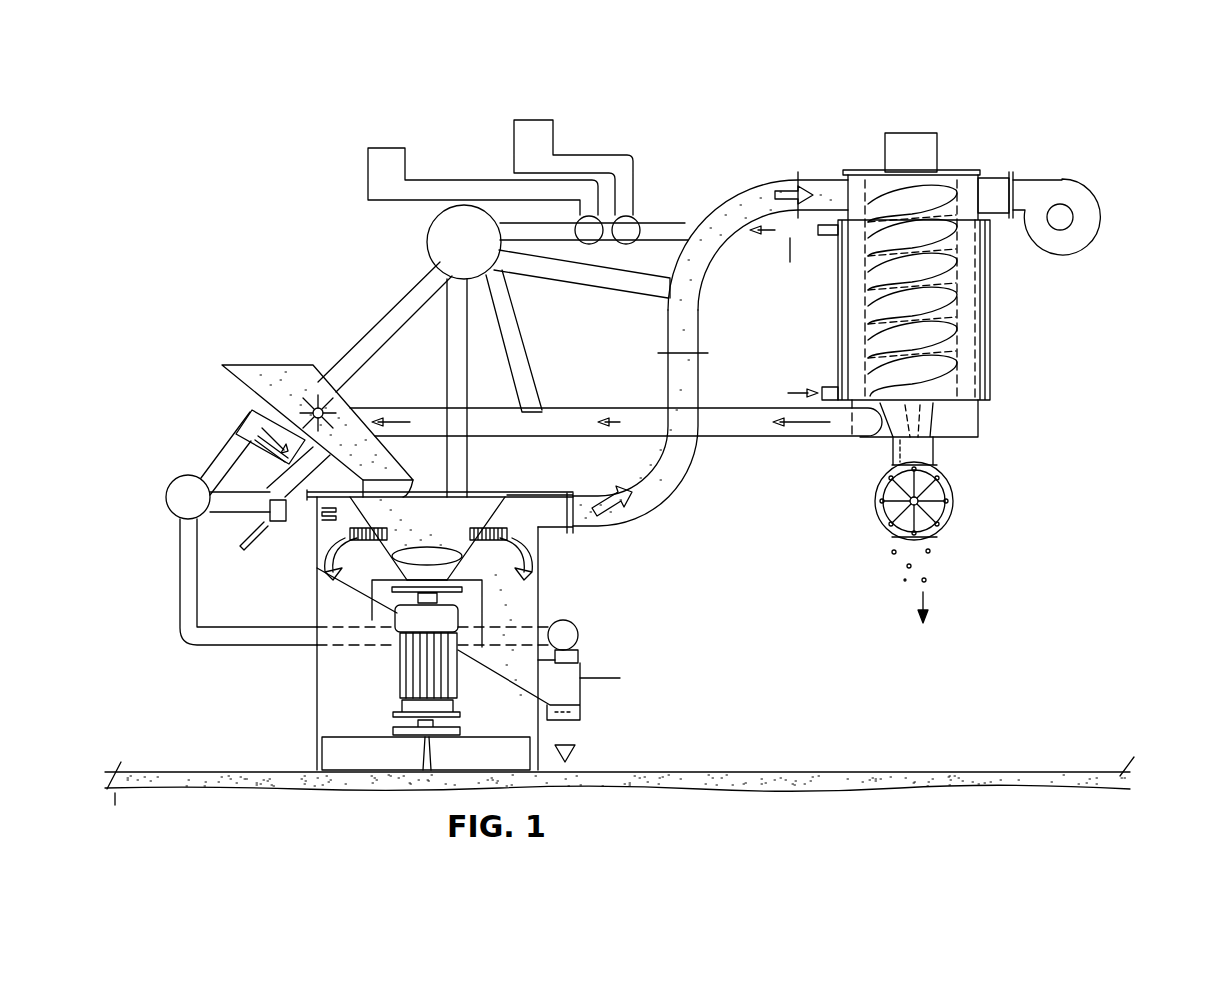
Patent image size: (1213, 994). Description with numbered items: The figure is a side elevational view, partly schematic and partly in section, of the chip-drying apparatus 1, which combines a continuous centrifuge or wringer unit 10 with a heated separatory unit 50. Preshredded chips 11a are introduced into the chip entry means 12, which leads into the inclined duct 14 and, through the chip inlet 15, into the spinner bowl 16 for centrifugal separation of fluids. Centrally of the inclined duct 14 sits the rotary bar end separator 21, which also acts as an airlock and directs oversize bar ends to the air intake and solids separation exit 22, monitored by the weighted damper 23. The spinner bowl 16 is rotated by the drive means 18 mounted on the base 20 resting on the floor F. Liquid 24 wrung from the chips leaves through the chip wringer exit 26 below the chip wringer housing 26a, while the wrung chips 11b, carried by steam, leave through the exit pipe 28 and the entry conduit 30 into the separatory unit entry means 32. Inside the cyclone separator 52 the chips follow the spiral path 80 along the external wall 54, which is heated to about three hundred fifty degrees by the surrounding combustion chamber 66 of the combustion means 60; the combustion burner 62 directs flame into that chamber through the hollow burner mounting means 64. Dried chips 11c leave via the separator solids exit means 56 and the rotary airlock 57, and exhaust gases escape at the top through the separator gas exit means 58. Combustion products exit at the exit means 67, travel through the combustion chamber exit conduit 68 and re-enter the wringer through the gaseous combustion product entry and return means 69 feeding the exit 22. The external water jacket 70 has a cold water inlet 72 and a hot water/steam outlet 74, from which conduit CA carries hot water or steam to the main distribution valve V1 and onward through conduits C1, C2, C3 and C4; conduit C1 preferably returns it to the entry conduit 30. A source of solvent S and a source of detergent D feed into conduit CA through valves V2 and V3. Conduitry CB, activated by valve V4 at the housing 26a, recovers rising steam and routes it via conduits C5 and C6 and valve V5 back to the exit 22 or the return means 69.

The tar sand processing system 1 is at (168, 162).
The continuous centrifuge or wringer unit 10 is at (232, 695).
The preshredded chips 11a is at (263, 383).
The wrung chips 11b is at (637, 518).
The clean and dry chips 11c is at (895, 560).
The chip entry means 12 is at (278, 365).
The inclined duct 14 is at (315, 362).
The chip inlet 15 is at (421, 490).
The spinner bowl 16 is at (436, 534).
The drive means 18 is at (397, 668).
The base 20 is at (477, 766).
The rotary bar end separator 21 is at (332, 410).
The air intake and solids separation exit 22 is at (276, 523).
The weighted damper 23 is at (243, 548).
The liquid 24 is at (612, 724).
The chip wringer exit 26 is at (581, 705).
The chip wringer housing 26a is at (635, 681).
The exit pipe 28 is at (573, 527).
The entry conduit 30 is at (668, 487).
The separatory unit entry means 32 is at (883, 207).
The heated separatory unit 50 is at (1058, 150).
The cyclone separator 52 is at (945, 170).
The external wall 54 is at (960, 302).
The separator solids exit means 56 is at (933, 457).
The rotary airlock 57 is at (955, 498).
The separator gas exit means 58 is at (924, 166).
The combustion means 60 is at (968, 172).
The combustion burner 62 is at (1012, 290).
The hollow burner mounting means 64 is at (1006, 205).
The combustion chamber 66 is at (967, 348).
The exit means 67 is at (868, 426).
The combustion chamber exit conduit 68 is at (743, 438).
The gaseous combustion product entry and return means 69 is at (250, 410).
The external water jacket 70 is at (993, 388).
The cold water inlet 72 is at (825, 386).
The hot water/steam outlet 74 is at (826, 260).
The spiral path 80 is at (850, 317).
The conduit C1 is at (612, 290).
The conduit C2 is at (446, 372).
The conduit C3 is at (517, 352).
The conduit C4 is at (393, 305).
The conduit C5 is at (233, 490).
The conduit C6 is at (218, 448).
The conduit CA is at (731, 243).
The conduitry CB is at (235, 630).
The source of detergent D is at (573, 167).
The source of solvent S is at (483, 181).
The main distribution valve V1 is at (428, 234).
The valve V2 is at (595, 242).
The valve V3 is at (637, 222).
The valve V4 is at (573, 622).
The valve V5 is at (167, 490).
The floor F is at (619, 772).